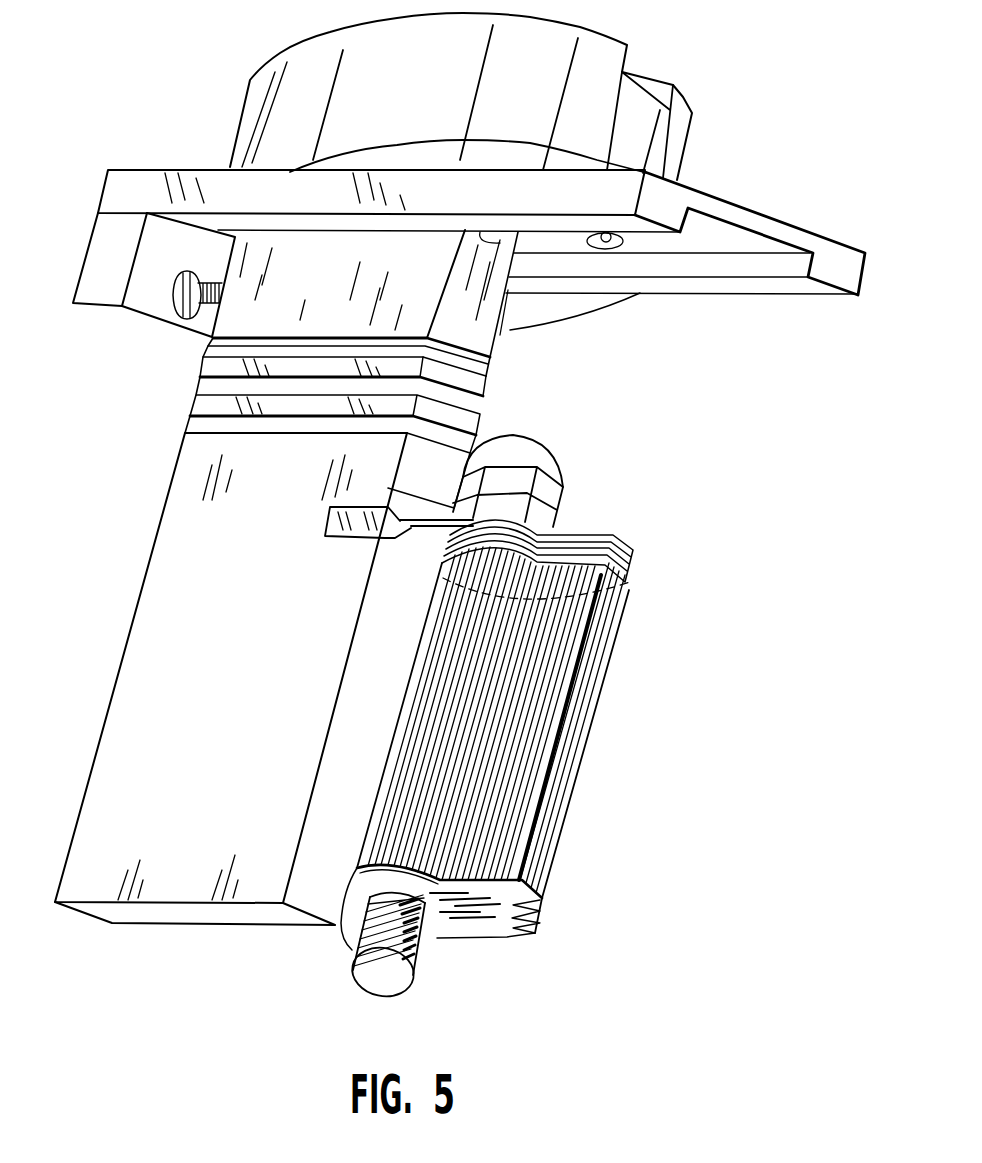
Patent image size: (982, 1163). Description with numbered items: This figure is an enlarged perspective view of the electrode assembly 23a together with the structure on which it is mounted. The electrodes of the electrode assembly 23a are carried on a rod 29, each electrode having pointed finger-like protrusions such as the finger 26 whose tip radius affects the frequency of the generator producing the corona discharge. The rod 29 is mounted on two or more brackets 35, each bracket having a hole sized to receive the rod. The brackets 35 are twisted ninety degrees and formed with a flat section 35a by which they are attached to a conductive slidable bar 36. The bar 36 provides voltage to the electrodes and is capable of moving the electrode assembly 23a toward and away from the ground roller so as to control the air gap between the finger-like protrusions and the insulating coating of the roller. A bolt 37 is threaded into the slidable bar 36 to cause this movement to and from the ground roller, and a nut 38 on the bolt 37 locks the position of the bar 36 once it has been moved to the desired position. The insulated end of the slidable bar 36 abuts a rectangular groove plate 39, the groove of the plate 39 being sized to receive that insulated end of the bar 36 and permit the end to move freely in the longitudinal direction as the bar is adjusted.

The rectangular groove plate 39 is at (213, 185).
The nut 38 is at (173, 305).
The bolt 37 is at (201, 340).
The conductive slidable bar 36 is at (152, 643).
The bracket 35 is at (412, 530).
The flat section 35a is at (325, 535).
The electrode assembly 23a is at (585, 721).
The finger 26 is at (540, 918).
The rod 29 is at (402, 987).